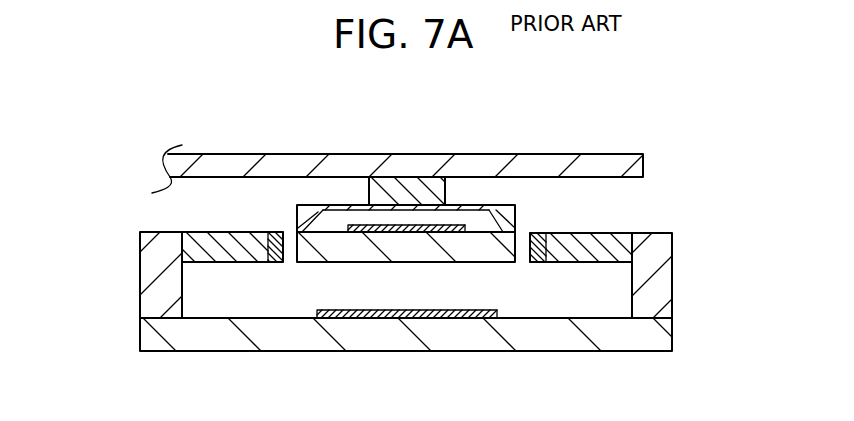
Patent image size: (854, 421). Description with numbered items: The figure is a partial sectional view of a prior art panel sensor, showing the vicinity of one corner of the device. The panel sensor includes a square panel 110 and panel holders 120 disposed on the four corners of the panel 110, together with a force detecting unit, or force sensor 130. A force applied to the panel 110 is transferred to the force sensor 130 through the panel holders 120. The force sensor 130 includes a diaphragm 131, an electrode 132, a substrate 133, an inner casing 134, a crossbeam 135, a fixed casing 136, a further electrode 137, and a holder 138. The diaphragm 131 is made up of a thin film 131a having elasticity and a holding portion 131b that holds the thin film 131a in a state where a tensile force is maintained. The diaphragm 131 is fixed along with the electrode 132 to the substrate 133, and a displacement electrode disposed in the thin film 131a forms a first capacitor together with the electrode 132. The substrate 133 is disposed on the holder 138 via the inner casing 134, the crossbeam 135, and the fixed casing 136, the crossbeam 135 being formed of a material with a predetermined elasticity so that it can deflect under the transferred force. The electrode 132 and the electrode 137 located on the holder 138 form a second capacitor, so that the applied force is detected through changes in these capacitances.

The square panel 110 is at (231, 163).
The panel holder 120 is at (371, 180).
The force detecting unit 130 is at (592, 212).
The diaphragm 131 is at (629, 50).
The thin film 131a is at (467, 207).
The holding portion 131b is at (502, 220).
The electrode 132 is at (355, 234).
The substrate 133 is at (397, 250).
The inner casing 134 is at (268, 263).
The crossbeam 135 is at (190, 247).
The fixed casing 136 is at (152, 311).
The electrode 137 is at (463, 318).
The holder 138 is at (650, 340).